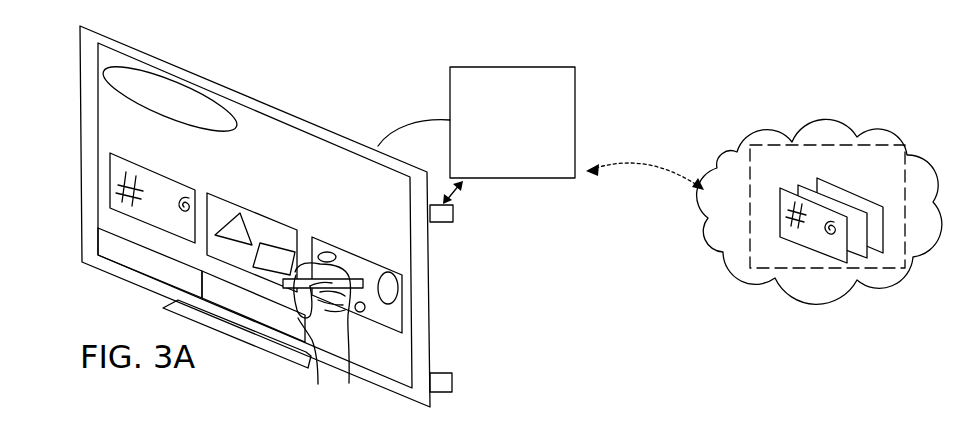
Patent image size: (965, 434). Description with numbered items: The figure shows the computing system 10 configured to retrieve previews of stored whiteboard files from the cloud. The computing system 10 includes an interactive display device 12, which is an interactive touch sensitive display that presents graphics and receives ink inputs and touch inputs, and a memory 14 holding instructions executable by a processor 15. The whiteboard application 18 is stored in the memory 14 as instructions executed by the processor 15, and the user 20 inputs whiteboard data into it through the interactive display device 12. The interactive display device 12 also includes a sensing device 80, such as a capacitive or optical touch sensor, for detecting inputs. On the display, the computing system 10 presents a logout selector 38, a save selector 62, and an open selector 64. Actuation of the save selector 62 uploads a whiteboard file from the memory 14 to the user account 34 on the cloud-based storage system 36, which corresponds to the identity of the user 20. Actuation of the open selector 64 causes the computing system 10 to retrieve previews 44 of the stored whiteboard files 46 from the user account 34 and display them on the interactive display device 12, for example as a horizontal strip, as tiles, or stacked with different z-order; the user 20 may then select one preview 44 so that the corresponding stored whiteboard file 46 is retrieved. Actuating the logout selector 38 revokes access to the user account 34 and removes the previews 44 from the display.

The computing system 10 is at (307, 104).
The interactive display device 12 is at (140, 291).
The memory 14 is at (567, 173).
The processor 15 is at (453, 214).
The whiteboard application 18 is at (125, 126).
The user 20 is at (322, 397).
The user account 34 is at (900, 178).
The cloud-based storage system 36 is at (732, 233).
The logout selector 38 is at (238, 127).
The previews 44 is at (229, 194).
The stored whiteboard files 46 is at (812, 253).
The save selector 62 is at (188, 298).
The open selector 64 is at (288, 332).
The sensing device 80 is at (452, 385).